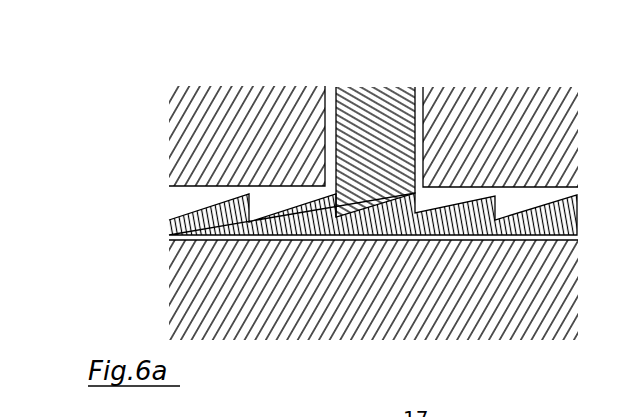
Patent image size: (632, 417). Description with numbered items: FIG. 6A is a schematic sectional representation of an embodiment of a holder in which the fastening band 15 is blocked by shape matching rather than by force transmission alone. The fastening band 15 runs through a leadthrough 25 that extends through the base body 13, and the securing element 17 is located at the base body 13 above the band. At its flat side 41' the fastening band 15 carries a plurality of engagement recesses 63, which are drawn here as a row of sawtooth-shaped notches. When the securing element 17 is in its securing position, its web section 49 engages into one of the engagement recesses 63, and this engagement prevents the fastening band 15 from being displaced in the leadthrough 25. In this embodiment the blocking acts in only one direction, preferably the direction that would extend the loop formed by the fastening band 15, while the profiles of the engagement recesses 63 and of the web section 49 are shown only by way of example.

The base body 13 is at (542, 130).
The fastening band 15 is at (180, 215).
The securing element 17 is at (373, 110).
The leadthrough 25 is at (158, 205).
The flat side 41' is at (247, 128).
The web section 49 is at (358, 197).
The engagement recesses 63 is at (510, 210).